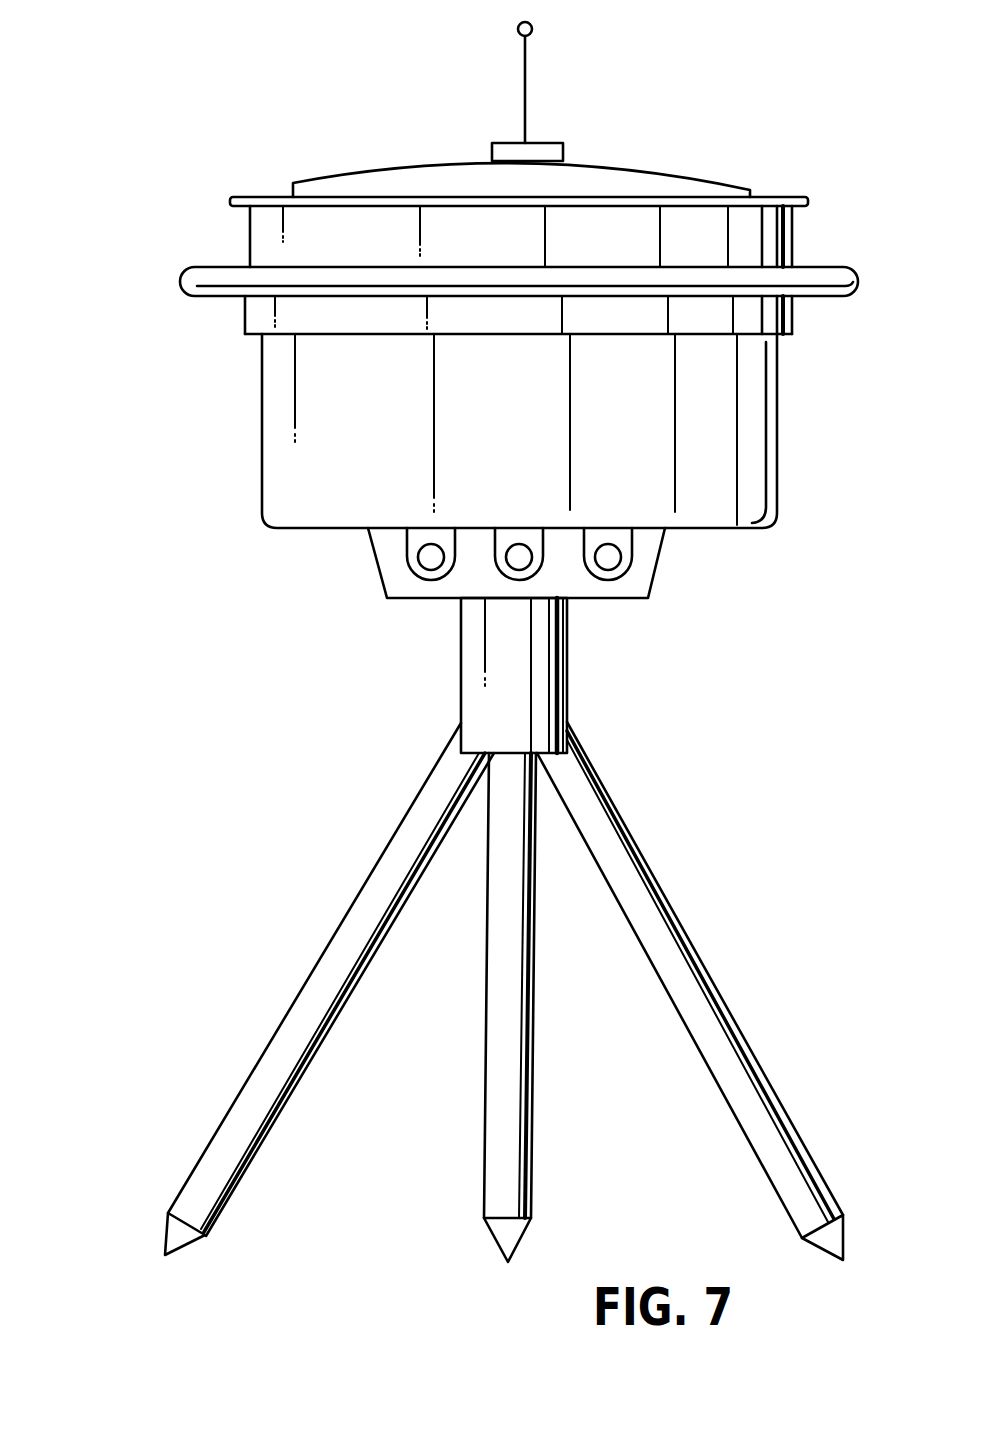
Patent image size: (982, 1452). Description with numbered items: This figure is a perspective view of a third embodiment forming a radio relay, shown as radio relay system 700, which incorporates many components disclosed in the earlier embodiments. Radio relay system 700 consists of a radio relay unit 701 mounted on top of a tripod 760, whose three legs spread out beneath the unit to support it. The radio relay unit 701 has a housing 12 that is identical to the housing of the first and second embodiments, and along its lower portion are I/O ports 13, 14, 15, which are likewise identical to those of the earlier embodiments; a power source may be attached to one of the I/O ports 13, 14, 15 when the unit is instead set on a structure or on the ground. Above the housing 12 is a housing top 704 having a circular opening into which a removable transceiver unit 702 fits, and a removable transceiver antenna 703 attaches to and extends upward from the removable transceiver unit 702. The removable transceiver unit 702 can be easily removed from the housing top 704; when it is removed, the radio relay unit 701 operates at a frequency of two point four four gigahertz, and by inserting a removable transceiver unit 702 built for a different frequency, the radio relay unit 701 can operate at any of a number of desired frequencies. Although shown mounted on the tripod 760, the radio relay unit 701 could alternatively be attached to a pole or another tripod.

The radio relay system 700 is at (511, 642).
The radio relay unit 701 is at (702, 127).
The removable transceiver unit 702 is at (553, 143).
The removable transceiver antenna 703 is at (525, 97).
The housing top 704 is at (410, 163).
The housing 12 is at (519, 466).
The I/O port 13 is at (431, 548).
The I/O port 14 is at (517, 550).
The I/O port 15 is at (607, 550).
The tripod 760 is at (663, 895).